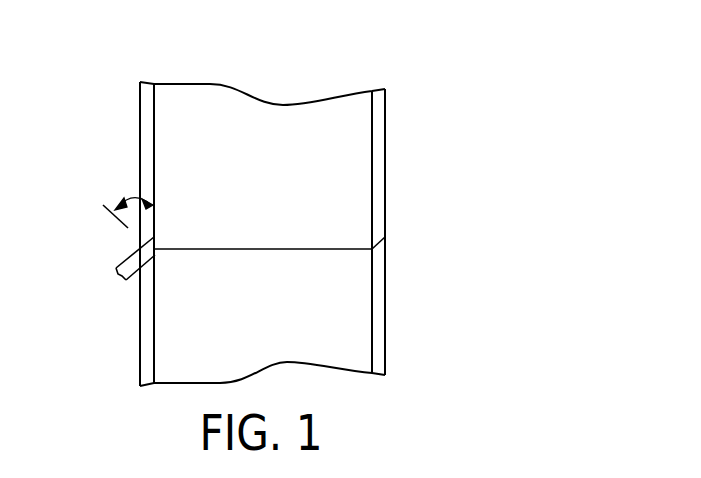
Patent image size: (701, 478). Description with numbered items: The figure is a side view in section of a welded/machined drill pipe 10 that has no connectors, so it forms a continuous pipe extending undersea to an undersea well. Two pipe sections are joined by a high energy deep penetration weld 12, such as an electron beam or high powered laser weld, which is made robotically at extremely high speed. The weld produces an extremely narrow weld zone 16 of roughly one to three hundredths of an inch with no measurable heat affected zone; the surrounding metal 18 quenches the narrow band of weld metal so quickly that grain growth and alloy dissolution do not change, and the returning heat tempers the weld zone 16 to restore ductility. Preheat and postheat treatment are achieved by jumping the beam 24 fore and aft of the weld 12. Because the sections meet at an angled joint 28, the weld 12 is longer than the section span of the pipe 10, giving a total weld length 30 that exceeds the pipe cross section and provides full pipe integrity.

The drill pipe 10 is at (338, 340).
The high energy deep penetration weld 12 is at (398, 220).
The weld zone 16 is at (372, 249).
The surrounding metal 18 is at (338, 157).
The beam 24 is at (417, 213).
The angled joint 28 is at (134, 195).
The total weld length 30 is at (120, 278).